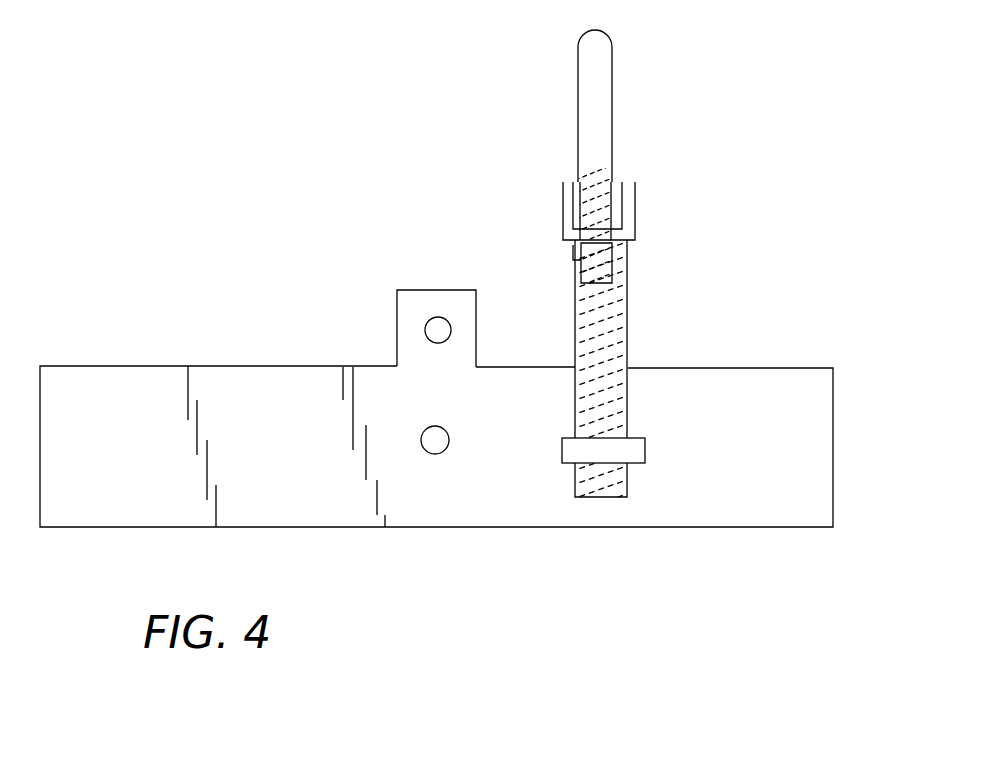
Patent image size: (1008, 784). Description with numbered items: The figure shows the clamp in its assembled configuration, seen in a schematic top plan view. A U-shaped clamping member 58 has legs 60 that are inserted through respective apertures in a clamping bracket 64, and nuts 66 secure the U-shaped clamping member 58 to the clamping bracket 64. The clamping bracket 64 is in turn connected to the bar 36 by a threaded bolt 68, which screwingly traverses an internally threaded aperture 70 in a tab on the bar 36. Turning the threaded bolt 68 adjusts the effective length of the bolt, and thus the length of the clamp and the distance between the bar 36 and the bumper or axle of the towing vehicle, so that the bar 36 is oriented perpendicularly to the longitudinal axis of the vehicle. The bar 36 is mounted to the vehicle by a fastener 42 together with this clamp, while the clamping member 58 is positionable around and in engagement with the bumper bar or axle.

The bar 36 is at (793, 398).
The fastener 42 is at (400, 327).
The U-shaped clamping member 58 is at (613, 58).
The legs 60 is at (590, 176).
The clamping bracket 64 is at (630, 228).
The nuts 66 is at (622, 248).
The threaded bolt 68 is at (582, 314).
The internally threaded aperture 70 is at (637, 455).